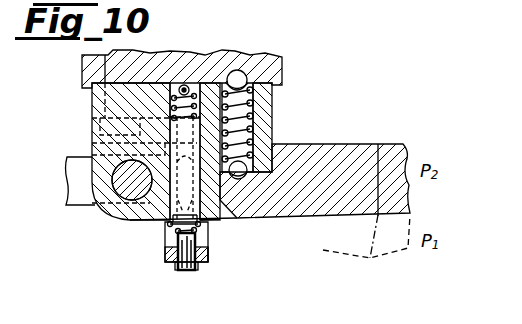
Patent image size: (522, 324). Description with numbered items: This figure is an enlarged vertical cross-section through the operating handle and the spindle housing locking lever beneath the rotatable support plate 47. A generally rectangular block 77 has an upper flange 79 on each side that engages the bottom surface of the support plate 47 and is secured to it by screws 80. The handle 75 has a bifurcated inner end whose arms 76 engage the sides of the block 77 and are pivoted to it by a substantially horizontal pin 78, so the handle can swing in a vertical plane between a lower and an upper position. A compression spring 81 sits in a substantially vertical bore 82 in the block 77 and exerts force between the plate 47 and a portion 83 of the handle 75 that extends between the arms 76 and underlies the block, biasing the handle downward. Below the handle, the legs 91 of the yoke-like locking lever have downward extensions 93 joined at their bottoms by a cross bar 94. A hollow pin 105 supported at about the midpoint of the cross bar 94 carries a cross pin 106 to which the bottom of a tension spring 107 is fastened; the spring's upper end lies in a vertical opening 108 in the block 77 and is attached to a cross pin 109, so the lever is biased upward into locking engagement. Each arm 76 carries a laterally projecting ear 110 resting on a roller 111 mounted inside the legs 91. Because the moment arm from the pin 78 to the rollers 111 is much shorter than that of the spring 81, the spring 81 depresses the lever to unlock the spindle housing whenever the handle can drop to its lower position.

The support plate 47 is at (283, 53).
The handle 75 is at (405, 144).
The arms 76 is at (214, 219).
The block 77 is at (273, 138).
The pin 78 is at (128, 212).
The upper flange 79 is at (273, 118).
The screws 80 is at (96, 106).
The spring 81 is at (255, 106).
The vertical bore 82 is at (249, 83).
The portion of the handle 83 is at (323, 250).
The legs 91 is at (68, 183).
The extensions 93 is at (166, 234).
The cross bar 94 is at (208, 254).
The hollow pin 105 is at (172, 270).
The cross pin 106 is at (178, 268).
The tension spring 107 is at (223, 58).
The vertical opening 108 is at (206, 80).
The cross pin 109 is at (197, 83).
The ear 110 is at (88, 145).
The rollers 111 is at (165, 226).